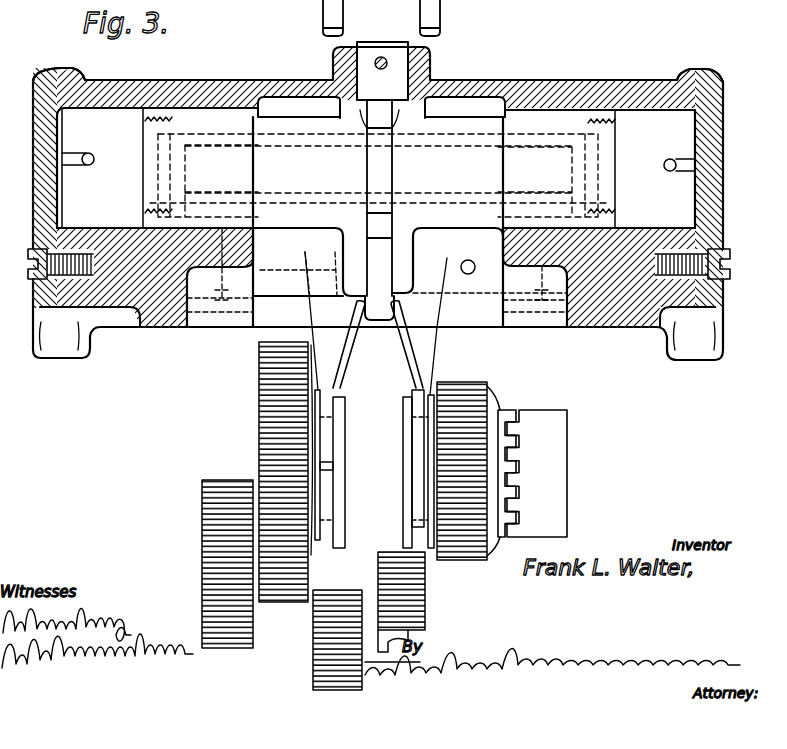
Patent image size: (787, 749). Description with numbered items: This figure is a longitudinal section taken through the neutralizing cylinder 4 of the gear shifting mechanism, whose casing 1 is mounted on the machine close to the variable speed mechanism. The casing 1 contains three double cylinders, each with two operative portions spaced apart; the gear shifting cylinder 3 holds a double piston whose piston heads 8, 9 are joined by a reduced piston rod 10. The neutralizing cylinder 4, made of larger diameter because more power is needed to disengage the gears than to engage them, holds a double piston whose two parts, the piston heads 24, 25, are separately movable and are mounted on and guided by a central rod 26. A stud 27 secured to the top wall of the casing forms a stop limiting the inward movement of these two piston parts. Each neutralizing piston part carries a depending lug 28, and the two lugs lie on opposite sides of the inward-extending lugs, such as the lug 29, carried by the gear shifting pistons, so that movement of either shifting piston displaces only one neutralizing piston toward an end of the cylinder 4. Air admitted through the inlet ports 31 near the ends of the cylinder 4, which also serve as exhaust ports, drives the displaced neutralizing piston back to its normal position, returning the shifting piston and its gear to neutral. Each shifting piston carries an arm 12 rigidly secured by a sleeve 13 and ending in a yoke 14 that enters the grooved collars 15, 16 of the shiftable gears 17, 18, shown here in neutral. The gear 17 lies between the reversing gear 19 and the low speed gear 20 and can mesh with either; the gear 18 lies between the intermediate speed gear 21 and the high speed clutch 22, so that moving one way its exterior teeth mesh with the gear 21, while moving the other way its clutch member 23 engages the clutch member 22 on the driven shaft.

The casing 1 is at (558, 100).
The gear shifting cylinder 3 is at (548, 327).
The neutralizing cylinder 4 is at (117, 107).
The piston head 8 is at (541, 290).
The piston head 9 is at (215, 302).
The piston rod 10 is at (277, 287).
The arm 12 is at (410, 351).
The sleeve 13 is at (483, 300).
The yoke 14 is at (418, 8).
The grooved collar 15 is at (338, 501).
The grooved collar 16 is at (402, 498).
The shiftable gear 17 is at (262, 412).
The shiftable gear 18 is at (452, 393).
The reversing gear 19 is at (203, 490).
The low speed gear 20 is at (313, 647).
The intermediate speed gear 21 is at (425, 602).
The high speed clutch member 22 is at (523, 413).
The clutch member 23 is at (506, 410).
The piston head 24 is at (518, 128).
The piston head 25 is at (204, 127).
The central rod 26 is at (378, 173).
The stud 27 is at (392, 112).
The depending lug 28 is at (400, 243).
The lug 29 is at (376, 263).
The inlet port 31 is at (62, 157).